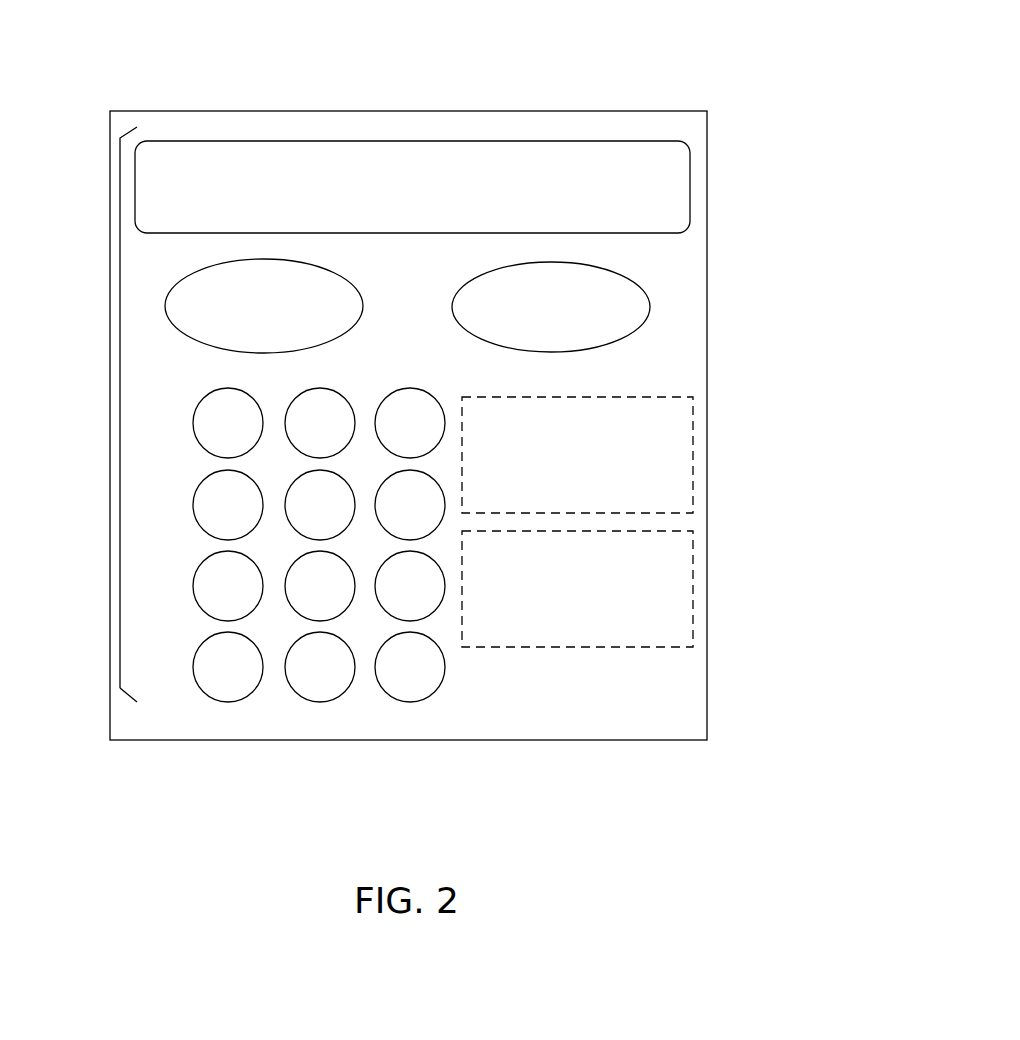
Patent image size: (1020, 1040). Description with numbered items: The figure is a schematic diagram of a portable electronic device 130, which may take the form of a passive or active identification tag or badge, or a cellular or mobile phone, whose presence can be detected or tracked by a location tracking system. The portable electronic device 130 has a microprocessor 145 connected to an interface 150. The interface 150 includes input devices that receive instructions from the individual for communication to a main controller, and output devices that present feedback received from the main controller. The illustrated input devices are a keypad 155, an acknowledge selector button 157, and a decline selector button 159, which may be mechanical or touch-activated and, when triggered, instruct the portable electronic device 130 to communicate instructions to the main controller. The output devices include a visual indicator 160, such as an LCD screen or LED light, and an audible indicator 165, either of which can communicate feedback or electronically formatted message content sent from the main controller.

The portable electronic device 130 is at (581, 88).
The microprocessor 145 is at (640, 395).
The interface 150 is at (120, 375).
The keypad 155 is at (271, 694).
The acknowledge selector button 157 is at (165, 297).
The decline selector button 159 is at (652, 305).
The visual indicator 160 is at (645, 195).
The audible indicator 165 is at (695, 588).